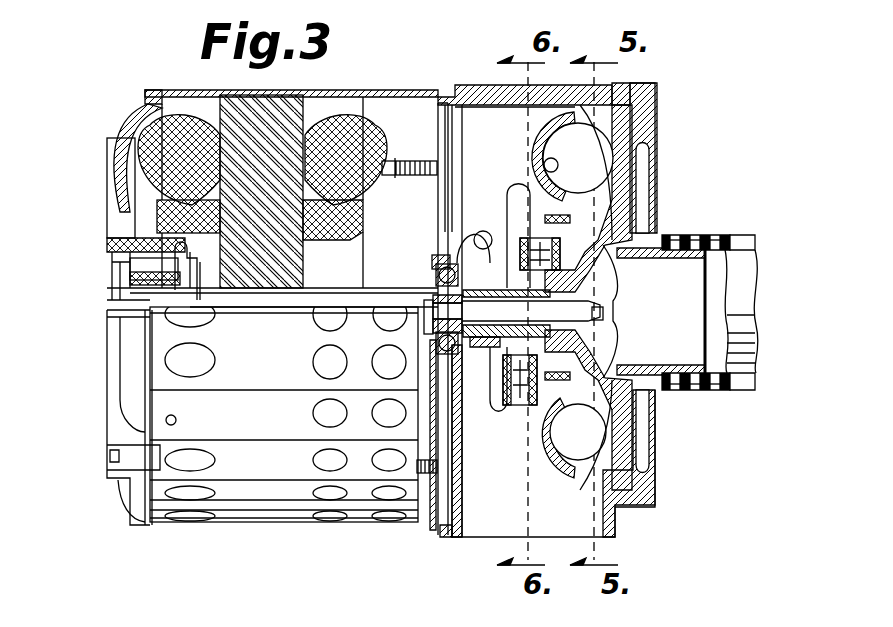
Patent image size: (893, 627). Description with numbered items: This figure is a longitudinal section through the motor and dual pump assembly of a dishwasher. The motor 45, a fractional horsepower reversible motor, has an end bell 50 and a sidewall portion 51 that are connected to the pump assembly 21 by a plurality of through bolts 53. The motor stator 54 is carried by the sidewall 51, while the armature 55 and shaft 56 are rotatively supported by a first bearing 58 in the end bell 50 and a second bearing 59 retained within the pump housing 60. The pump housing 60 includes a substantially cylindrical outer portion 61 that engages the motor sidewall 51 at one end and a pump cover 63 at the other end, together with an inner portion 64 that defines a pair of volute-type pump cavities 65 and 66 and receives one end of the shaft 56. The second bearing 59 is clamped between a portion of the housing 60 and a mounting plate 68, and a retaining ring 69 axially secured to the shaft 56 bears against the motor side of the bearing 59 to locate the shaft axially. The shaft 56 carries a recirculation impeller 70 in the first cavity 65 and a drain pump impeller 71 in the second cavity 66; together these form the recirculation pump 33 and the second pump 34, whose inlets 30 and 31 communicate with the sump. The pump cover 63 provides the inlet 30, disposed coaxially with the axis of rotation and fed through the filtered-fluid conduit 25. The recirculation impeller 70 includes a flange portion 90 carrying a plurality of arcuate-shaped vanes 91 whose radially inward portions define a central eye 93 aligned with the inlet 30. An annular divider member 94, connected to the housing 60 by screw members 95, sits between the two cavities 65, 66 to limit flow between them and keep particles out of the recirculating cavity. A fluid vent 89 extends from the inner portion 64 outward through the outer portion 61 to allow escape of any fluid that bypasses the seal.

The dual pump assembly 21 is at (675, 163).
The filtered-fluid conduit 25 is at (710, 391).
The inlet 30 is at (700, 250).
The inlet 31 is at (462, 240).
The recirculation pump 33 is at (612, 147).
The second pump 34 is at (516, 210).
The motor 45 is at (280, 505).
The end bell 50 is at (105, 428).
The sidewall portion 51 is at (284, 409).
The through bolts 53 is at (398, 110).
The motor stator 54 is at (242, 112).
The armature 55 is at (290, 262).
The shaft 56 is at (412, 290).
The first bearing 58 is at (128, 270).
The second bearing 59 is at (438, 288).
The pump housing 60 is at (470, 85).
The outer portion 61 is at (494, 87).
The pump cover 63 is at (648, 492).
The inner portion 64 is at (502, 410).
The first pump cavity 65 is at (542, 130).
The second pump cavity 66 is at (520, 405).
The mounting plate 68 is at (437, 258).
The retaining ring 69 is at (424, 324).
The recirculation impeller 70 is at (614, 268).
The drain pump impeller 71 is at (497, 222).
The fluid vent 89 is at (470, 402).
The flange portion 90 is at (583, 280).
The vanes 91 is at (612, 262).
The central eye 93 is at (618, 313).
The annular divider member 94 is at (600, 392).
The screw members 95 is at (600, 410).